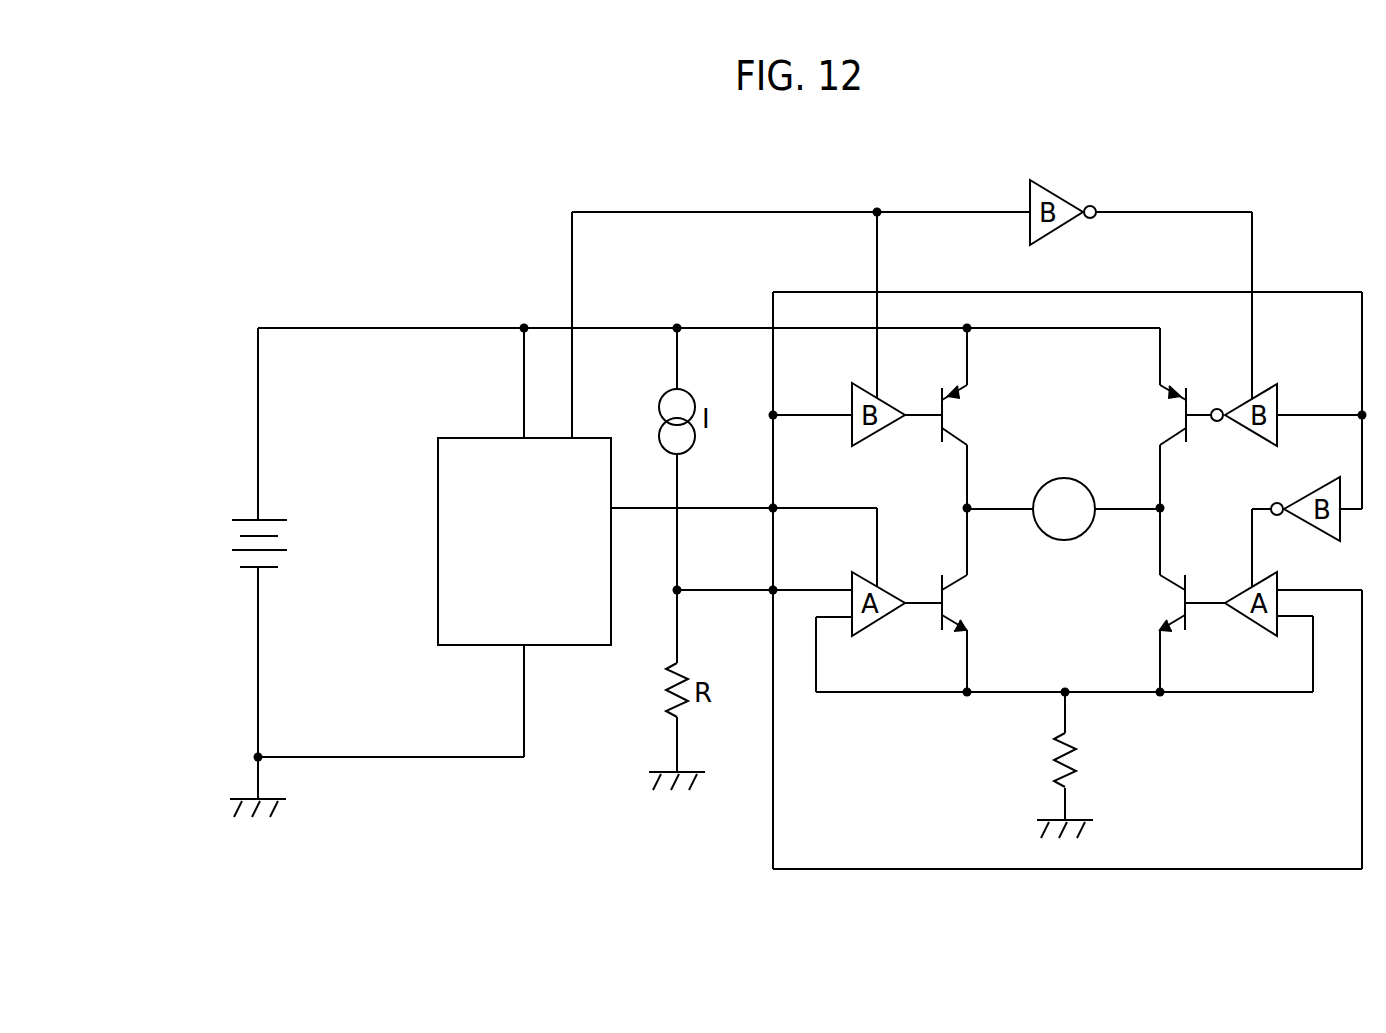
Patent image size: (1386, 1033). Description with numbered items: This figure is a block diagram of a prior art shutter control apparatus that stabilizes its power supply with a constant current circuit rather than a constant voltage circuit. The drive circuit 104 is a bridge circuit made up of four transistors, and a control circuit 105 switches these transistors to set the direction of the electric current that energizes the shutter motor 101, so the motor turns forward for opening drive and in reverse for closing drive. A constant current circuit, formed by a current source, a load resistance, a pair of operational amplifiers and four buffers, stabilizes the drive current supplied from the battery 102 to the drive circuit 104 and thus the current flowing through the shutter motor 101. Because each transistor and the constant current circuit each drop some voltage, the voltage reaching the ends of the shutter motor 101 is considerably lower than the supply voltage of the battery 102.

The shutter motor 101 is at (1064, 540).
The battery 102 is at (228, 536).
The drive circuit 104 is at (1065, 390).
The control circuit 105 is at (438, 541).